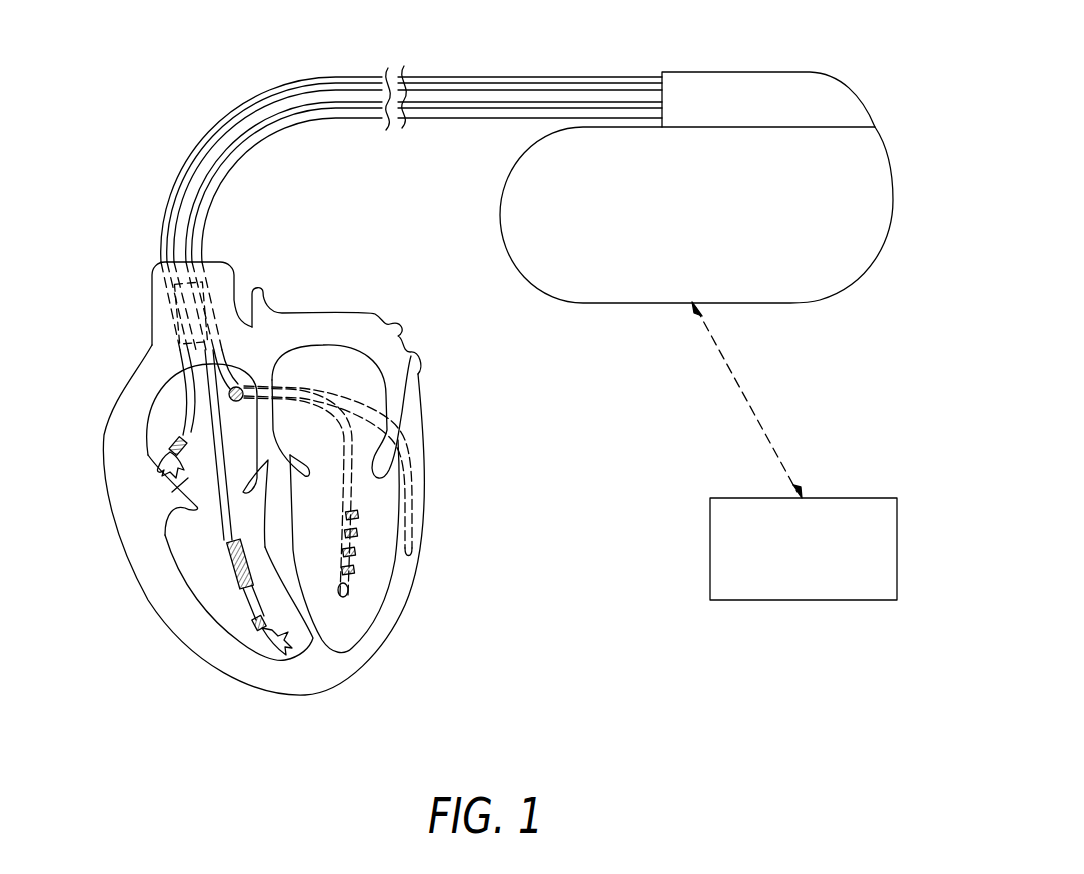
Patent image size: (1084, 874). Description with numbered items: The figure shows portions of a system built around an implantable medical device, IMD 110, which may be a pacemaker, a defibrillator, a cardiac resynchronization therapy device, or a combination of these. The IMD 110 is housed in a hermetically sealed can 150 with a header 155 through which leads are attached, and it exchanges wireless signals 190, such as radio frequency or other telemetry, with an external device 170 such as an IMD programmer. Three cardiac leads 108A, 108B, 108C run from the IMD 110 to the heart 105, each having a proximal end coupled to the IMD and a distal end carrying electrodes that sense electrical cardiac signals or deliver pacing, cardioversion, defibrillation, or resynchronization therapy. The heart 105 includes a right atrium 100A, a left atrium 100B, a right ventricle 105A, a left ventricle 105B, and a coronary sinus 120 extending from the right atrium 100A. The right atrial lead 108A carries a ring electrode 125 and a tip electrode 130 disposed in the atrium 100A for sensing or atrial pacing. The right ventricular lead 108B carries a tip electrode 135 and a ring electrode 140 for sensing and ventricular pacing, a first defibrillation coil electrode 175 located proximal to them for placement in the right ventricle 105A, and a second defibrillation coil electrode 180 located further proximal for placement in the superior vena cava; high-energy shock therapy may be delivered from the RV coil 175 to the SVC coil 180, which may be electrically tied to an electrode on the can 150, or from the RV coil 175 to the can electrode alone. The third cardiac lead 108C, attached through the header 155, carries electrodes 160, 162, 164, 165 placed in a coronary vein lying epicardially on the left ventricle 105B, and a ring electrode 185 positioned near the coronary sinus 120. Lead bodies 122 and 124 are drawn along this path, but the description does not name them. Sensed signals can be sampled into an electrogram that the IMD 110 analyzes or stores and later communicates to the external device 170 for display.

The IMD 110 is at (768, 55).
The heart 105 is at (426, 450).
The right atrium 100A is at (188, 514).
The left atrium 100B is at (345, 357).
The right ventricle 105A is at (195, 530).
The left ventricle 105B is at (345, 630).
The right atrial lead 108A is at (306, 90).
The right ventricular lead 108B is at (250, 127).
The third cardiac lead 108C is at (268, 143).
The coronary sinus 120 is at (237, 402).
The left ventricular lead body 122 is at (360, 500).
The coronary vein lead portion 124 is at (398, 428).
The ring electrode 125 is at (170, 452).
The tip electrode 130 is at (190, 481).
The tip electrode 135 is at (270, 654).
The ring electrode 140 is at (250, 638).
The IMD housing 150 is at (893, 194).
The header 155 is at (834, 96).
The electrode 160 is at (354, 558).
The electrode 162 is at (357, 538).
The electrode 164 is at (358, 518).
The electrode 165 is at (350, 577).
The external device 170 is at (897, 556).
The first defibrillation coil electrode 175 is at (235, 586).
The second defibrillation coil electrode 180 is at (178, 312).
The ring electrode 185 is at (238, 386).
The wireless signals 190 is at (750, 400).